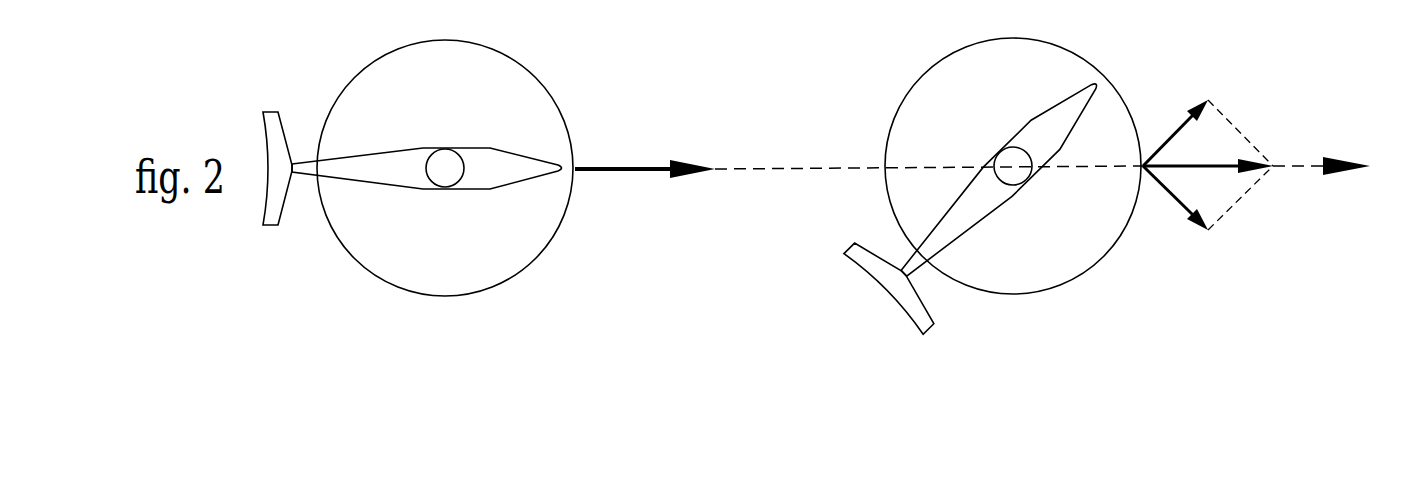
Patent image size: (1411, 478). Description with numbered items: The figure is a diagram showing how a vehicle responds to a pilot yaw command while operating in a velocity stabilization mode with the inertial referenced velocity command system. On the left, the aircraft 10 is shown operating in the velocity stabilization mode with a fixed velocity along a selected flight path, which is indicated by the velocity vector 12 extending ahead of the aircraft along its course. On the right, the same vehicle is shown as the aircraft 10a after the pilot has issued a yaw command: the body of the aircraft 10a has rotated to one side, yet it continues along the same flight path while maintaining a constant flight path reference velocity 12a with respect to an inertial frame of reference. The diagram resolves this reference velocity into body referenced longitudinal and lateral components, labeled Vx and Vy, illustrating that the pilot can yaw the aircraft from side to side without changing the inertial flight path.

The aircraft 10 is at (270, 203).
The velocity vector 12 is at (600, 167).
The aircraft 10a is at (887, 275).
The flight path reference velocity 12a is at (1225, 170).